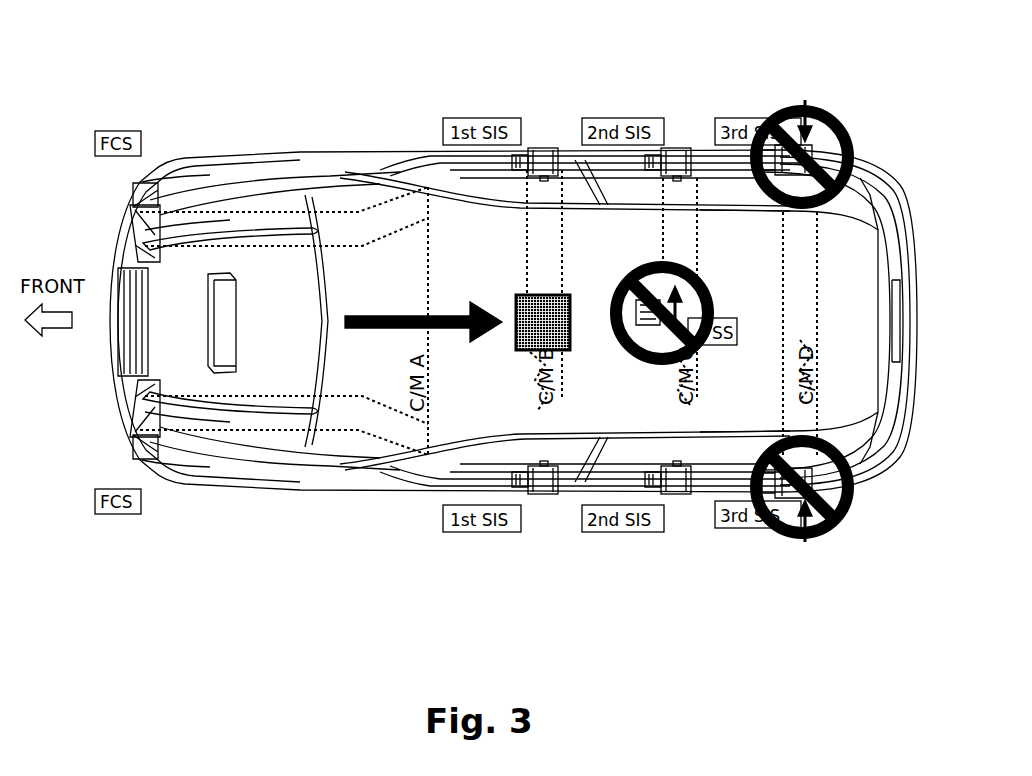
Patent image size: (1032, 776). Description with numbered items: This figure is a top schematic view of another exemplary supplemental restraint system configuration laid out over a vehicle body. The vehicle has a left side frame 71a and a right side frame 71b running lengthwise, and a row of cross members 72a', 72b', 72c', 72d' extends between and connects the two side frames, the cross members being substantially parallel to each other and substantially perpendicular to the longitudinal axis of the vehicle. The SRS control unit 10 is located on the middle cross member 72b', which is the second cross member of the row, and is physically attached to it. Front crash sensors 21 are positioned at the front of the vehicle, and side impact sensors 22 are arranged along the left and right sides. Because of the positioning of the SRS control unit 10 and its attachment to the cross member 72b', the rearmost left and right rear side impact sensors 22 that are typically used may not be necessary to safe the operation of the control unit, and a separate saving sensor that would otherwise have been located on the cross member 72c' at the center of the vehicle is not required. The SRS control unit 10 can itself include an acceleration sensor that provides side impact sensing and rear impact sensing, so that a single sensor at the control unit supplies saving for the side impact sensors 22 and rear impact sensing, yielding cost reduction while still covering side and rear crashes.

The SRS control unit 10 is at (545, 352).
The front crash sensor 21 is at (102, 192).
The side impact sensor 22 is at (545, 130).
The left side frame 71a is at (230, 410).
The right side frame 71b is at (233, 227).
The cross member 72a' is at (284, 321).
The middle cross member 72b' is at (506, 290).
The cross member 72c' is at (724, 291).
The cross member 72d' is at (828, 333).